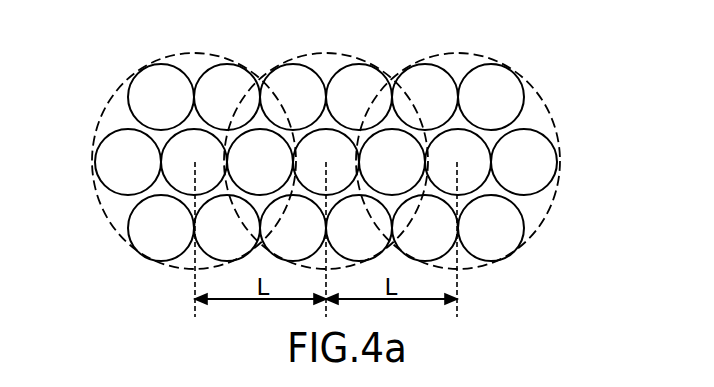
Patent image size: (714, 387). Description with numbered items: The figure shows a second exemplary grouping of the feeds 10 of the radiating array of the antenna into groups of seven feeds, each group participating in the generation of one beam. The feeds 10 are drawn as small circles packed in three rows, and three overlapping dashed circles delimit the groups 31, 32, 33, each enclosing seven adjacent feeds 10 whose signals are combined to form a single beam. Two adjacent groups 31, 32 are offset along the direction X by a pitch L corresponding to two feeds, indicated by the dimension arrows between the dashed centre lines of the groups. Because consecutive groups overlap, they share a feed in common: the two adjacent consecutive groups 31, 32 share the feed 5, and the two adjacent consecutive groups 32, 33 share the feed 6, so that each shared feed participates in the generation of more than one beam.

The feed 10 is at (148, 82).
The feed 5 is at (260, 162).
The feed 6 is at (392, 162).
The group 31 is at (120, 203).
The group 32 is at (320, 67).
The group 33 is at (535, 117).